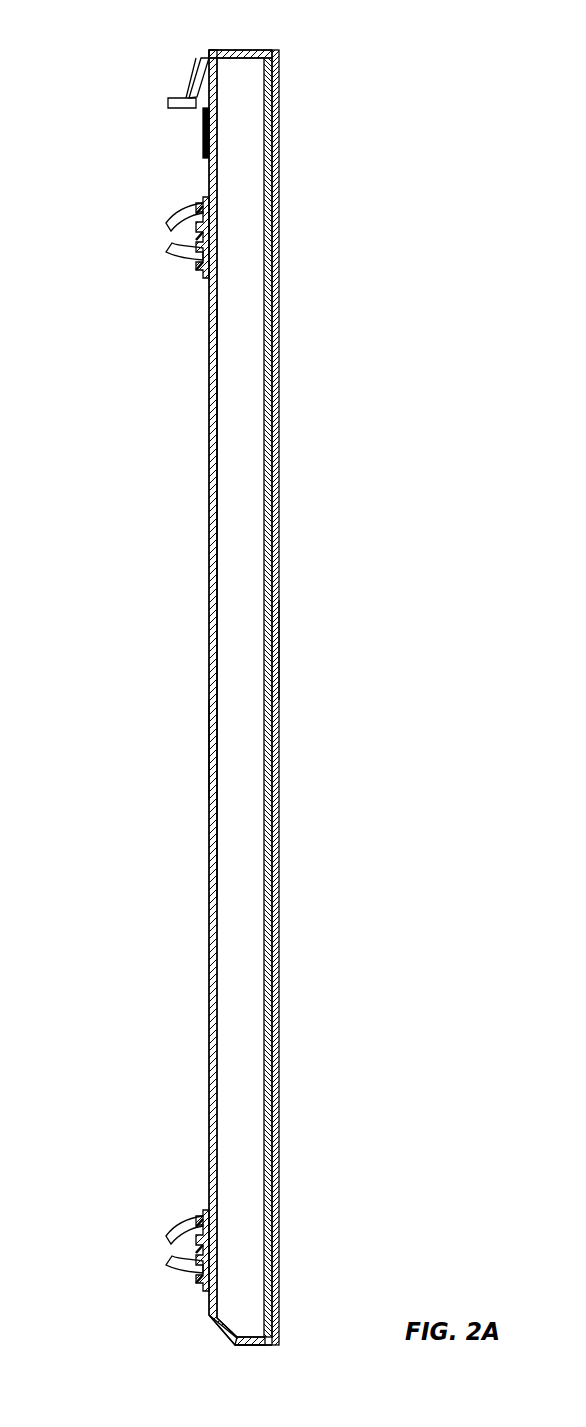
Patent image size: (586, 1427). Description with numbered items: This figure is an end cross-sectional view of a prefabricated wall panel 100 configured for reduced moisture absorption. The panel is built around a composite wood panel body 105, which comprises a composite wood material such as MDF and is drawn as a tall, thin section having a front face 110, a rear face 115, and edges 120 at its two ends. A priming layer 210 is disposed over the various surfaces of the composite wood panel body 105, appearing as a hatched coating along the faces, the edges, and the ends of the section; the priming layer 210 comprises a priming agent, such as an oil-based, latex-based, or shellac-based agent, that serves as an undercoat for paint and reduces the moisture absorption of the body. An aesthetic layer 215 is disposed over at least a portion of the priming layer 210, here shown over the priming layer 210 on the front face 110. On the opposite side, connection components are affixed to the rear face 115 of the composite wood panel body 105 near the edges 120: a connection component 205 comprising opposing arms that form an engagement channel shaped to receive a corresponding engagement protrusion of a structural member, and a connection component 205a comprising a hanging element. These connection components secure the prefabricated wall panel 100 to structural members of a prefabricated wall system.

The prefabricated wall panel 100 is at (286, 693).
The composite wood panel body 105 is at (235, 613).
The front face 110 is at (293, 653).
The rear face 115 is at (195, 742).
The edges 120 is at (229, 42).
The connection component 205 is at (170, 212).
The connection component 205a is at (170, 102).
The priming layer 210 is at (250, 50).
The aesthetic layer 215 is at (276, 552).